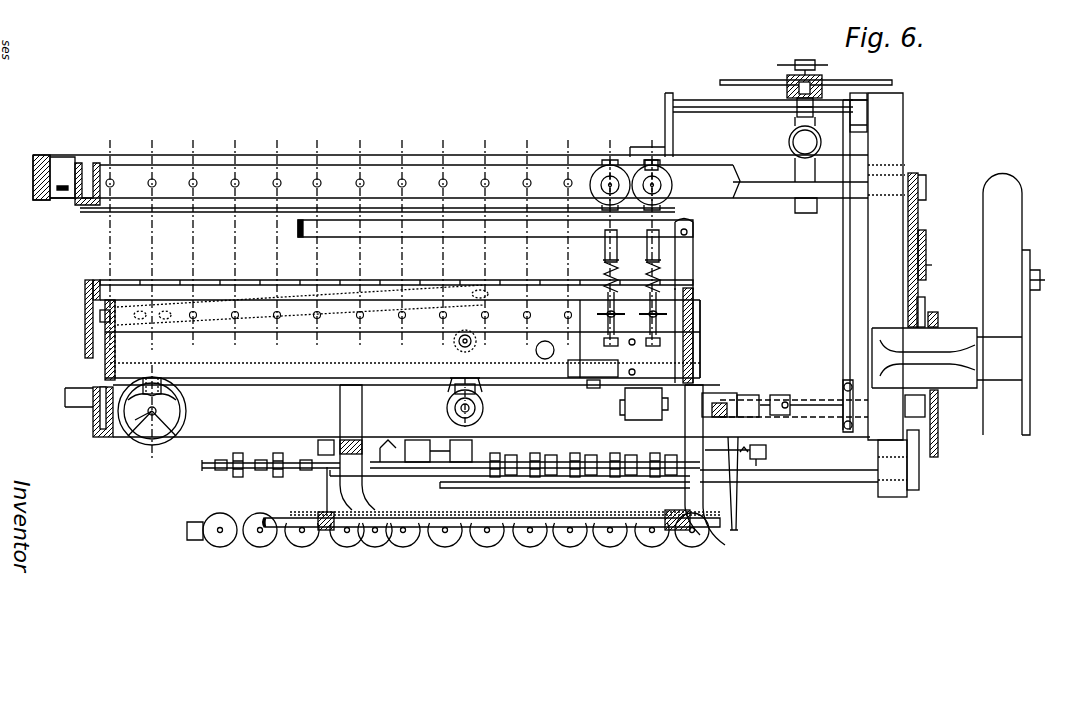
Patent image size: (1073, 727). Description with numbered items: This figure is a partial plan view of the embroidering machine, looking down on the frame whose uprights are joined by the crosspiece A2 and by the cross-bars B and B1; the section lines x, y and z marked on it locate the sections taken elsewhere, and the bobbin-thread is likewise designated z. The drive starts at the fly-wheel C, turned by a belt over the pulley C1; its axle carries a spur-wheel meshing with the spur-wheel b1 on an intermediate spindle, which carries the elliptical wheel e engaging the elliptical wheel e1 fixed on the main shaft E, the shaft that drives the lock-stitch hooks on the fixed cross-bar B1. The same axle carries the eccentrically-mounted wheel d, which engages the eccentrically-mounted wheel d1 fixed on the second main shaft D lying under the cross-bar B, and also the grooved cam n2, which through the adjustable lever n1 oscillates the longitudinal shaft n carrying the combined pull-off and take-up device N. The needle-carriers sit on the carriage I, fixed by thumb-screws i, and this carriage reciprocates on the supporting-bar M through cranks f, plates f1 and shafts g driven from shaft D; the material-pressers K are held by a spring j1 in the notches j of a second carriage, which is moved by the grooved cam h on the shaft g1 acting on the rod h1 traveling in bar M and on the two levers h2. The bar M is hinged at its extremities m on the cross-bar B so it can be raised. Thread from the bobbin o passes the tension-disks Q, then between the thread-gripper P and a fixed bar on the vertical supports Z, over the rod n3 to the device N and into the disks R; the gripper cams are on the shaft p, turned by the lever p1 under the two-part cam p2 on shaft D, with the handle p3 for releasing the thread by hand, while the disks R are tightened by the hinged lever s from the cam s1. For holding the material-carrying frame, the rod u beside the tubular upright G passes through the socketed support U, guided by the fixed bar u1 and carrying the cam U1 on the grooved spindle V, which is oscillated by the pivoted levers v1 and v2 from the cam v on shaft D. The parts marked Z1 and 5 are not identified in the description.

The crosspiece A2 is at (50, 172).
The main shaft E is at (80, 186).
The fixed cross-bar B1 is at (407, 184).
The section line z z is at (146, 298).
The guide rollers Z1 is at (650, 183).
The material-pressers K is at (602, 240).
The spindle V is at (716, 112).
The rod u is at (820, 90).
The fixed bar u1 is at (745, 82).
The socketed support U is at (792, 76).
The screw 5 is at (805, 60).
The cam U1 is at (795, 112).
The tubular upright of the material-carrying frame G is at (790, 150).
The pivoted lever v1 is at (860, 128).
The pivoted lever v2 is at (860, 266).
The elliptical wheel e is at (920, 222).
The elliptical wheel e1 is at (922, 186).
The spur-wheel b1 is at (926, 254).
The grooved cam n2 is at (922, 310).
The eccentrically-mounted wheel d is at (938, 320).
The fly-wheel C is at (947, 305).
The pulley C1 is at (1030, 424).
The shaft of the thread-gripper p is at (915, 392).
The eccentrically-mounted wheel d1 is at (938, 422).
The adjustable lever n1 is at (920, 466).
The section line y y is at (867, 279).
The main shaft D is at (78, 396).
The cam v is at (850, 398).
The cross-bar B is at (93, 418).
The grooved cam h is at (178, 418).
The rod h1 is at (168, 388).
The shaft g1 is at (140, 428).
The levers h2 is at (100, 316).
The supporting-bar M is at (106, 340).
The section line x x is at (80, 346).
The grooves or notches j is at (322, 548).
The bar or carriage I is at (402, 339).
The spring j1 is at (604, 258).
The thumb-screws i is at (660, 316).
The cranks f is at (482, 378).
The shafts g is at (447, 408).
The plates f1 is at (484, 410).
The extremities of the supporting-bar m is at (634, 410).
The vertical supports Z is at (521, 465).
The tension-disks Q is at (271, 456).
The disks R is at (535, 450).
The thread-gripper P is at (412, 444).
The longitudinal shaft n is at (390, 470).
The lever p1 is at (517, 478).
The rod n3 is at (638, 470).
The cam p2 is at (710, 398).
The cam s1 is at (768, 452).
The hinged lever s is at (766, 462).
The handle p3 is at (738, 508).
The combined pull-off and take-up device N is at (483, 525).
The bobbin o is at (568, 540).